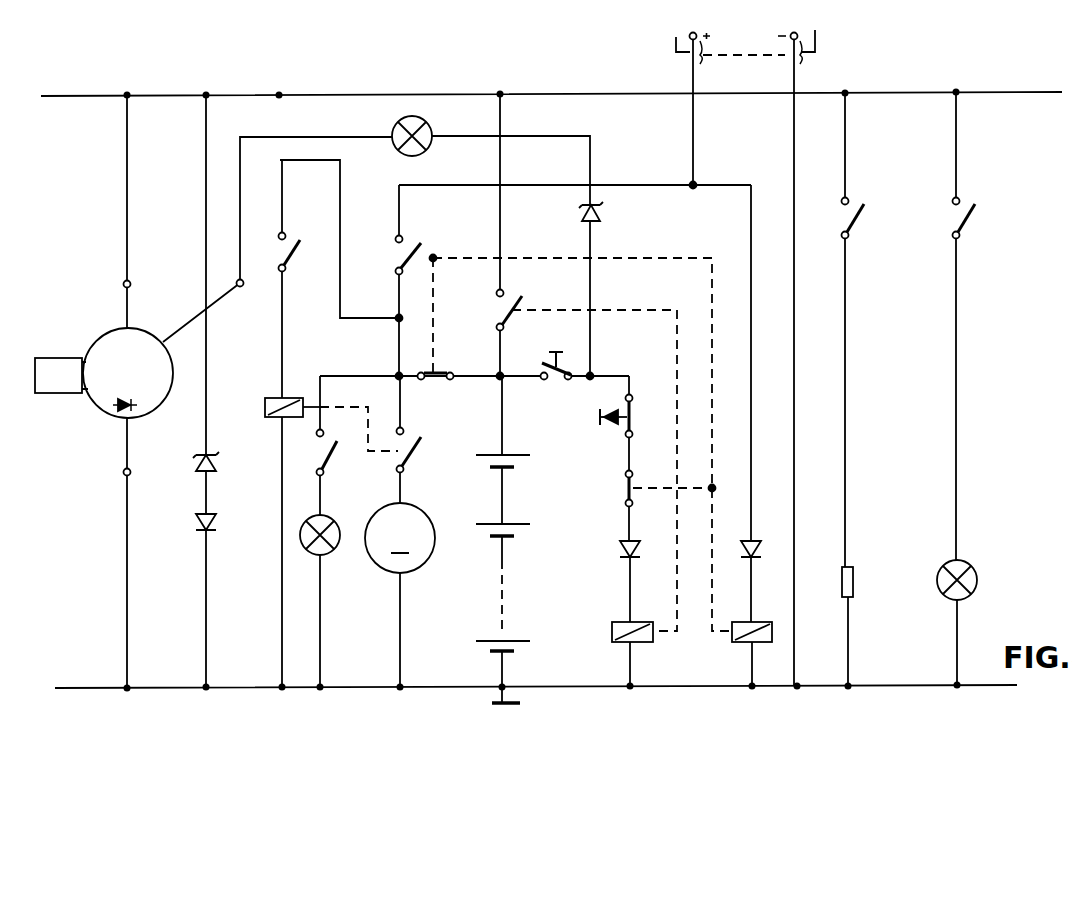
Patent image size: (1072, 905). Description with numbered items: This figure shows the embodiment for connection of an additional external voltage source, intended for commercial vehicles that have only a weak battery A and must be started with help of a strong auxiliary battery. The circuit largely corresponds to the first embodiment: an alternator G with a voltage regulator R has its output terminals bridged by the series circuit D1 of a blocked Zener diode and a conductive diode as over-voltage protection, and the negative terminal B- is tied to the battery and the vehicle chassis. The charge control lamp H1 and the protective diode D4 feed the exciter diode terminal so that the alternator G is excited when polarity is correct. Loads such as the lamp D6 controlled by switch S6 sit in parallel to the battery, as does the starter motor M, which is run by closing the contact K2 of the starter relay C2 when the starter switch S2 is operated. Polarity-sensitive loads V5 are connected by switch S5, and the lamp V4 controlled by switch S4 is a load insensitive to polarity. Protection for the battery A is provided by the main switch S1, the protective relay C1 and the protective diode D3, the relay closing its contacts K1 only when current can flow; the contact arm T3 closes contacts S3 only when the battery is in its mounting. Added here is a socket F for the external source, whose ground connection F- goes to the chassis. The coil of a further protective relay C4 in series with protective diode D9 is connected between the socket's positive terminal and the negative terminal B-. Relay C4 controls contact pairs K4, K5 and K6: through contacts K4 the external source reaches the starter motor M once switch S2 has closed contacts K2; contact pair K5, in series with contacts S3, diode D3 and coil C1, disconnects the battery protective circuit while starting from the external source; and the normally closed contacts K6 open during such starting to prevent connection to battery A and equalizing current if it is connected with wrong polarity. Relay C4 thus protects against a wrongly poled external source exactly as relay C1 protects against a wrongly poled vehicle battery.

The alternator G is at (237, 391).
The voltage regulator R is at (61, 375).
The negative terminal B- is at (139, 474).
The series circuit D1 is at (230, 443).
The starter switch S2 is at (339, 279).
The relay C2 is at (266, 398).
The switch S6 is at (327, 453).
The indicator lamp D6 is at (322, 548).
The contacts K4 is at (556, 407).
The normally closed contacts K6 is at (474, 387).
The contact K2 is at (423, 439).
The starter motor M is at (400, 595).
The charge control lamp H1 is at (491, 156).
The contacts K1 is at (573, 362).
The main switch S1 is at (556, 356).
The protective diode D4 is at (579, 291).
The battery A is at (498, 598).
The movable contact arm T3 is at (598, 415).
The contacts S3 is at (631, 417).
The contact pair K5 is at (626, 488).
The protective diode D3 is at (618, 550).
The protective relay C1 is at (618, 654).
The protective diode D9 is at (762, 546).
The protective relay C4 is at (737, 641).
The socket F is at (676, 52).
The ground connection F- is at (798, 360).
The switch S5 is at (866, 330).
The loads V5 is at (862, 626).
The switch S4 is at (977, 326).
The lamp V4 is at (971, 622).